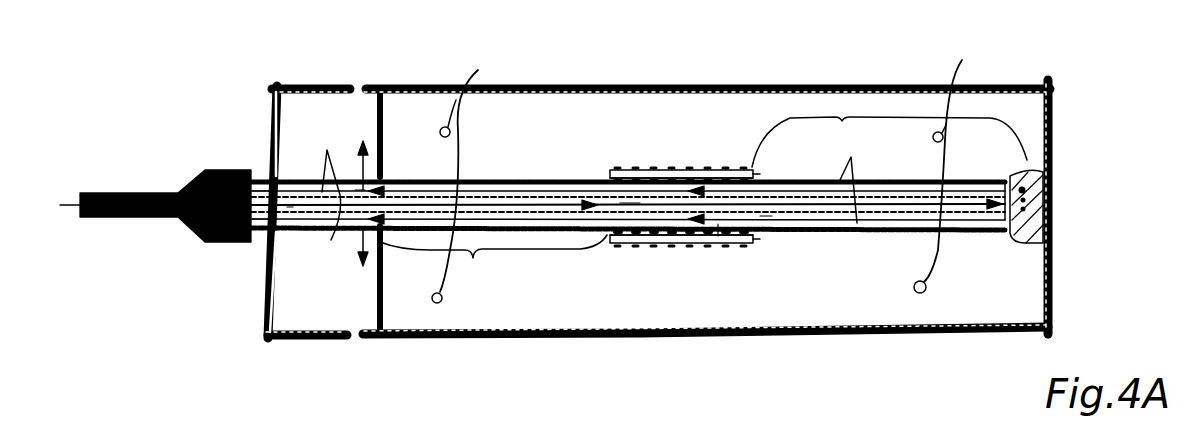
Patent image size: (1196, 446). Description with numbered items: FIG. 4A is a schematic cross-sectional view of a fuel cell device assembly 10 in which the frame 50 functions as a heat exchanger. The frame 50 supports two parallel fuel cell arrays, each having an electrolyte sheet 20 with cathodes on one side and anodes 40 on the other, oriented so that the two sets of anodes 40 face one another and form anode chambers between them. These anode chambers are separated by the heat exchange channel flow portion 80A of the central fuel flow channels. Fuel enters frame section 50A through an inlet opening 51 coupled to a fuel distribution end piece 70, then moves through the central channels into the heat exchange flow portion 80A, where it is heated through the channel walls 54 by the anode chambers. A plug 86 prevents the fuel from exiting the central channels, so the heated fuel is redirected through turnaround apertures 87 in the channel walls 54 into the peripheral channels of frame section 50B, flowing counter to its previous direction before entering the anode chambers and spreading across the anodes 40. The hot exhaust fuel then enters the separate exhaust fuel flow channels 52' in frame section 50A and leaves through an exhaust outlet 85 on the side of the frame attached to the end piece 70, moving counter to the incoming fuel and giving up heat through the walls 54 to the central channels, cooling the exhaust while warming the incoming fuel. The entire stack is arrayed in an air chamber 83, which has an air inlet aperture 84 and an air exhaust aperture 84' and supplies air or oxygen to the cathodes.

The fuel cell device assembly 10 is at (840, 54).
The electrolyte sheet 20 is at (620, 170).
The anodes 40 is at (660, 170).
The frame 50 is at (540, 182).
The frame section 50A is at (493, 264).
The frame section 50B is at (889, 132).
The inlet opening 51 is at (266, 182).
The exhaust fuel flow channels 52' is at (297, 169).
The channel walls 54 is at (602, 182).
The fuel distribution end piece 70 is at (234, 170).
The heat exchange channel flow portion 80A is at (623, 203).
The air chamber 83 is at (525, 123).
The air inlet aperture 84 is at (469, 178).
The air exhaust aperture 84' is at (956, 172).
The wires 85 is at (331, 240).
The plug 86 is at (1020, 190).
The turnaround apertures 87 is at (1013, 173).